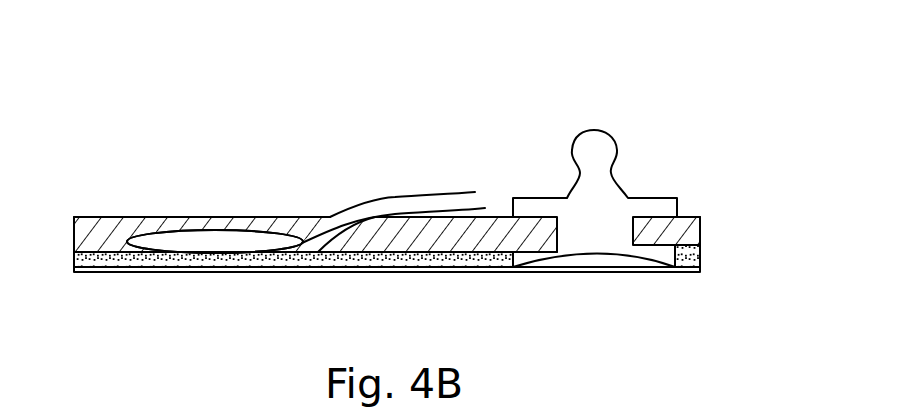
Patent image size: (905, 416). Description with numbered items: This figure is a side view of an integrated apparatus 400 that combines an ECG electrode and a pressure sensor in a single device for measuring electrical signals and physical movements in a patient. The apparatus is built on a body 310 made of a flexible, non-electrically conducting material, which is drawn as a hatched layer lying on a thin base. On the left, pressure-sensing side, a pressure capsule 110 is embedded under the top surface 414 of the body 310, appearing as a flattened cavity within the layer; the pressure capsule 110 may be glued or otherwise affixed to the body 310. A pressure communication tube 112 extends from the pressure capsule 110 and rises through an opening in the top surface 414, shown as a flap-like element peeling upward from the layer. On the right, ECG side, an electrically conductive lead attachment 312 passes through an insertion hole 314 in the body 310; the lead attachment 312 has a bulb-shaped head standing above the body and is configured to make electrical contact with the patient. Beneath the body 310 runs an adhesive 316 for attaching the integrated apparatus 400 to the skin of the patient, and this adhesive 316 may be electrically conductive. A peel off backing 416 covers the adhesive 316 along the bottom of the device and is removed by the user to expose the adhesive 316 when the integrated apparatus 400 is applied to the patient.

The integrated apparatus 400 is at (322, 57).
The body 310 is at (117, 217).
The top surface 414 is at (270, 217).
The pressure capsule 110 is at (215, 256).
The pressure communication tube 112 is at (472, 194).
The peel off backing 416 is at (102, 272).
The adhesive 316 is at (690, 257).
The lead attachment 312 is at (594, 128).
The insertion hole 314 is at (600, 232).